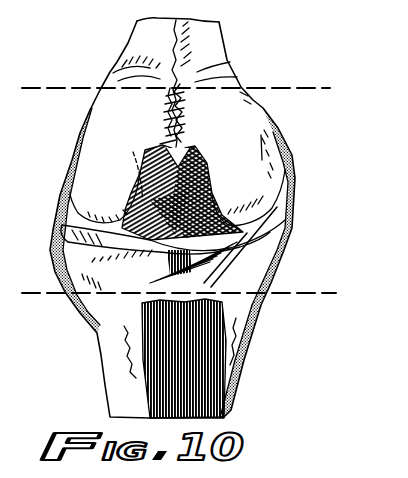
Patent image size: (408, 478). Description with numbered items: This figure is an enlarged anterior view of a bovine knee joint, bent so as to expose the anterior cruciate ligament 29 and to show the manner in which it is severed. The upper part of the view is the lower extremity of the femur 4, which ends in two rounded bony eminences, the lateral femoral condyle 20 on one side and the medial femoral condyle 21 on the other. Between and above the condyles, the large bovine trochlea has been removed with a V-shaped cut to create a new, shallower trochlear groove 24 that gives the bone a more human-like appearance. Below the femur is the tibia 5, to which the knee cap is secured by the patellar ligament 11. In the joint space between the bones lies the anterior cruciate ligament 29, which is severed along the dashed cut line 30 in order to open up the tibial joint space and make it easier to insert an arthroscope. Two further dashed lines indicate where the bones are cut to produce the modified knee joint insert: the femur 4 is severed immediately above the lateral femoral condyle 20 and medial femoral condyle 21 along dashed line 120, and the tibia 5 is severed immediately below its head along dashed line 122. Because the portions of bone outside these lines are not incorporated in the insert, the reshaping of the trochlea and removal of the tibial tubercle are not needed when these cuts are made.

The femur 4 is at (222, 26).
The trochlear groove 24 is at (230, 62).
The dashed line 120 is at (289, 89).
The dashed line 122 is at (298, 293).
The lateral femoral condyle 20 is at (90, 203).
The medial femoral condyle 21 is at (253, 185).
The dashed cut line 30 is at (136, 172).
The anterior cruciate ligament 29 is at (134, 205).
The patellar ligament 11 is at (214, 343).
The tibia 5 is at (232, 398).